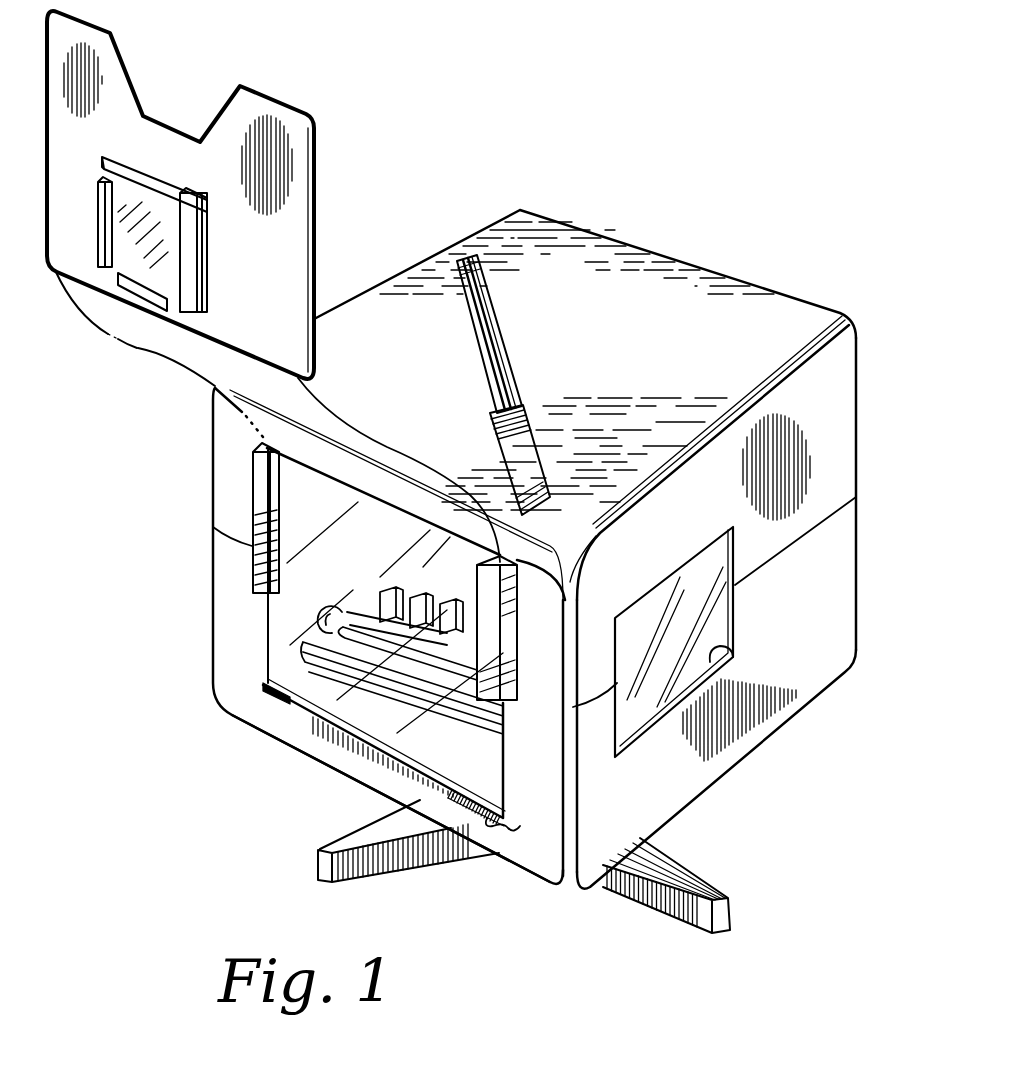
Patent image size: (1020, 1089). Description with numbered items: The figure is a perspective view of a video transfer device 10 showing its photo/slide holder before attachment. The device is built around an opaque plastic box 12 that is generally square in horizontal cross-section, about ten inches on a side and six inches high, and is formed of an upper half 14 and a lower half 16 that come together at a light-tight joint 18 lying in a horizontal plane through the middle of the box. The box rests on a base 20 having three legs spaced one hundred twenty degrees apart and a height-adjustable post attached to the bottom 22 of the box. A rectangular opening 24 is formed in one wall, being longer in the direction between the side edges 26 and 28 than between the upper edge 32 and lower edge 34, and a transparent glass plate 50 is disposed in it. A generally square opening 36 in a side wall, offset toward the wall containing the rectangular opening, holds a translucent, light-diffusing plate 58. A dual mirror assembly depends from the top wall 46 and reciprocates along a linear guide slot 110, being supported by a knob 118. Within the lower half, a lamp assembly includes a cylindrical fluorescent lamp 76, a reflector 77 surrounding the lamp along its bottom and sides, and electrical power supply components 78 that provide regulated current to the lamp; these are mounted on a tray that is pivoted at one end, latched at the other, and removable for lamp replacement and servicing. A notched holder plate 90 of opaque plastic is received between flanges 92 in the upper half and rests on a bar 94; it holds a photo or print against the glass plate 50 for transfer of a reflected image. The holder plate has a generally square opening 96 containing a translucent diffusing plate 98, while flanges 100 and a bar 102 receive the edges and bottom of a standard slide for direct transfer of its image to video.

The video transfer device 10 is at (414, 212).
The box 12 is at (520, 549).
The upper half 14 is at (850, 443).
The lower half 16 is at (843, 610).
The joint 18 is at (830, 525).
The base 20 is at (370, 872).
The bottom 22 is at (305, 705).
The rectangular opening 24 is at (483, 773).
The side edge 26 is at (572, 583).
The side edge 28 is at (212, 430).
The upper edge 32 is at (383, 446).
The lower edge 34 is at (320, 765).
The square opening 36 is at (740, 657).
The top wall 46 is at (660, 260).
The glass plate 50 is at (365, 515).
The translucent plate 58 is at (732, 606).
The fluorescent lamp 76 is at (340, 600).
The reflector 77 is at (370, 610).
The electrical power supply components 78 is at (444, 612).
The notched holder plate 90 is at (317, 158).
The flanges 92 is at (250, 497).
The bar 94 is at (510, 828).
The square opening 96 is at (176, 218).
The diffusing plate 98 is at (170, 248).
The flanges 100 is at (96, 195).
The bar 102 is at (170, 302).
The guide slot 110 is at (534, 385).
The knob 118 is at (535, 452).